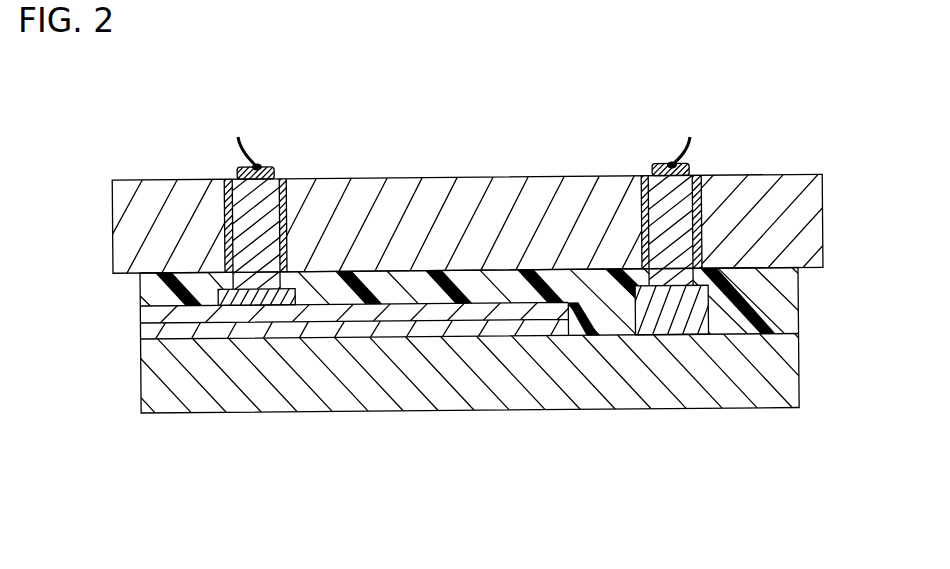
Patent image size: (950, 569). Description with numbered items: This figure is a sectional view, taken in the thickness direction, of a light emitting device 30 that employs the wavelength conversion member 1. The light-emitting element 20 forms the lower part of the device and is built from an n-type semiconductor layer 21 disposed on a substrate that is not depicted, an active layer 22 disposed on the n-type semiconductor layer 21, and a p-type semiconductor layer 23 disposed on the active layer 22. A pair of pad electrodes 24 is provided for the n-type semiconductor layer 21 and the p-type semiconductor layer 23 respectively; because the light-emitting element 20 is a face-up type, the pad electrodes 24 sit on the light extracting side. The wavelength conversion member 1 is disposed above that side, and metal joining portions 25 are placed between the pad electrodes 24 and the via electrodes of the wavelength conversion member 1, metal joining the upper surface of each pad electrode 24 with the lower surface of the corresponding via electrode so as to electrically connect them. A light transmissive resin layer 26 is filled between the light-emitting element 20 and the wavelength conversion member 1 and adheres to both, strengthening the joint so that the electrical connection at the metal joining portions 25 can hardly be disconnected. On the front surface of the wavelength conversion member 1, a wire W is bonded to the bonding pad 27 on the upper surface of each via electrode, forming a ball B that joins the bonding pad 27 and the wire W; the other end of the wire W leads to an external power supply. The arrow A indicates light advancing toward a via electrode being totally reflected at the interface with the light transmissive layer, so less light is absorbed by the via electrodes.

The wavelength conversion member 1 is at (765, 112).
The light-emitting element 20 is at (262, 432).
The n-type semiconductor layer 21 is at (157, 383).
The active layer 22 is at (140, 333).
The p-type semiconductor layer 23 is at (140, 313).
The pad electrode 24 is at (218, 290).
The metal joining portion 25 is at (248, 282).
The light transmissive resin layer 26 is at (608, 322).
The bonding pad 27 is at (262, 168).
The light emitting device 30 is at (453, 137).
The arrow A is at (327, 295).
The ball B is at (246, 169).
The wire W is at (238, 137).